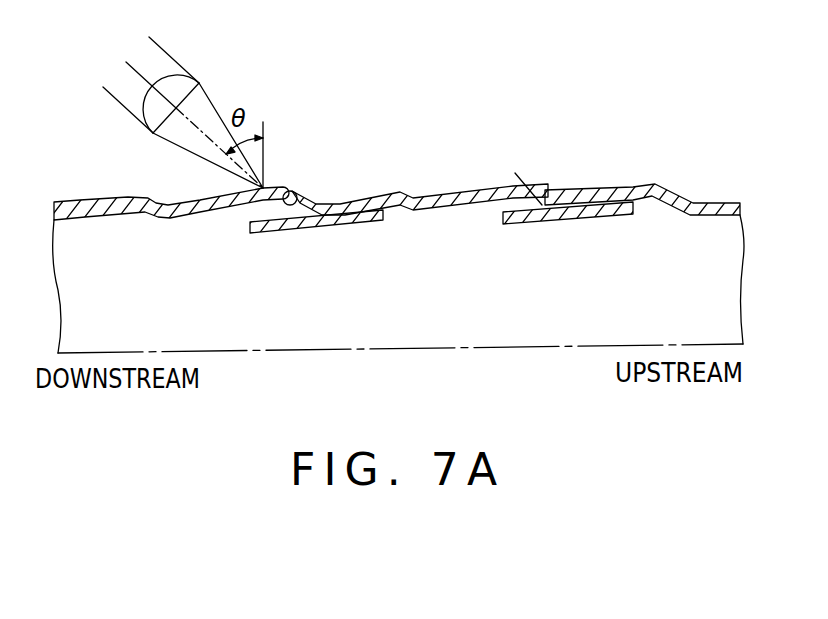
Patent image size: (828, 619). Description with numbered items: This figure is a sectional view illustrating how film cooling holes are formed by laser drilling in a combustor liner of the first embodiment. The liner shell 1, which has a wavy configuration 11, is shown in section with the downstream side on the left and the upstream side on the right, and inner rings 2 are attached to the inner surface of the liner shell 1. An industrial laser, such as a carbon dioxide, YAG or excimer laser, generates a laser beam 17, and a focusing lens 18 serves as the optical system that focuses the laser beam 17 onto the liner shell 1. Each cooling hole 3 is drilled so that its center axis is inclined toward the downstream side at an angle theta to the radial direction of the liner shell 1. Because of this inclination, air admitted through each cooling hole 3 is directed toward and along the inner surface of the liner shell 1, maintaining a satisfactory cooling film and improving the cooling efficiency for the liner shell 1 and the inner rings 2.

The liner shell 1 is at (448, 188).
The inner ring 2 is at (333, 224).
The film cooling hole 3 is at (301, 192).
The wavy configuration 11 is at (563, 187).
The laser beam 17 is at (162, 53).
The focusing lens 18 is at (199, 83).